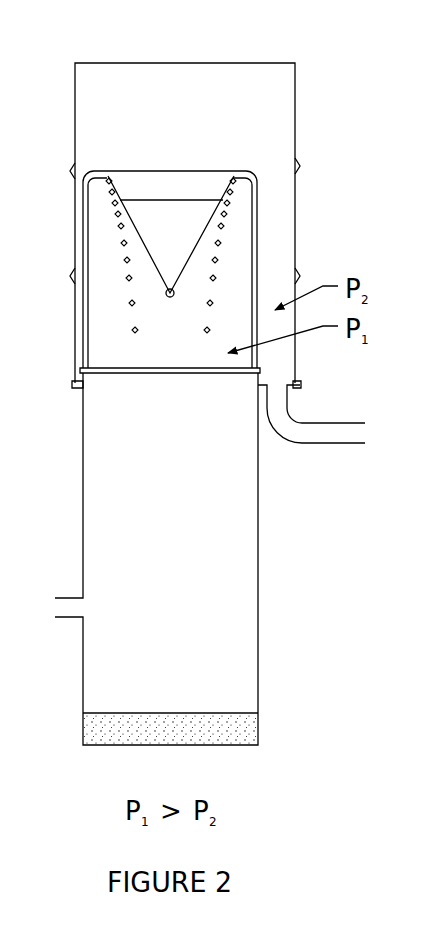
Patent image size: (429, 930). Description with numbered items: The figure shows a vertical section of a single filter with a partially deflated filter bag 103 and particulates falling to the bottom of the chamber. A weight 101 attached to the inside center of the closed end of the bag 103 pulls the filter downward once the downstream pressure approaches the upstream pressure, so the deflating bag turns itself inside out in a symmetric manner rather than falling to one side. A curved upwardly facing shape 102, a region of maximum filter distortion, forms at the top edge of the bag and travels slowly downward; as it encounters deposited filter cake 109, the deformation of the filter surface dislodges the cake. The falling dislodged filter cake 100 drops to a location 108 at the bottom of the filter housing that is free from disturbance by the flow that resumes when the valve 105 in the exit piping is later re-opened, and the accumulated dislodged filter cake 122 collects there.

The dislodged filter cake 100 is at (217, 272).
The weight 101 is at (172, 297).
The curved upwardly facing shape 102 is at (100, 175).
The filter bag 103 is at (145, 237).
The valve 105 is at (337, 441).
The filter housing bottom location 108 is at (235, 695).
The filter cake 109 is at (90, 327).
The accumulated dislodged filter cake 122 is at (237, 730).